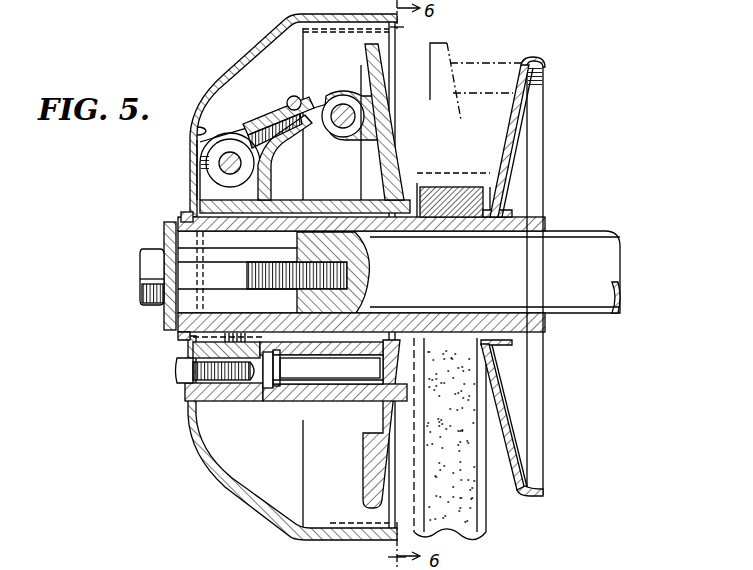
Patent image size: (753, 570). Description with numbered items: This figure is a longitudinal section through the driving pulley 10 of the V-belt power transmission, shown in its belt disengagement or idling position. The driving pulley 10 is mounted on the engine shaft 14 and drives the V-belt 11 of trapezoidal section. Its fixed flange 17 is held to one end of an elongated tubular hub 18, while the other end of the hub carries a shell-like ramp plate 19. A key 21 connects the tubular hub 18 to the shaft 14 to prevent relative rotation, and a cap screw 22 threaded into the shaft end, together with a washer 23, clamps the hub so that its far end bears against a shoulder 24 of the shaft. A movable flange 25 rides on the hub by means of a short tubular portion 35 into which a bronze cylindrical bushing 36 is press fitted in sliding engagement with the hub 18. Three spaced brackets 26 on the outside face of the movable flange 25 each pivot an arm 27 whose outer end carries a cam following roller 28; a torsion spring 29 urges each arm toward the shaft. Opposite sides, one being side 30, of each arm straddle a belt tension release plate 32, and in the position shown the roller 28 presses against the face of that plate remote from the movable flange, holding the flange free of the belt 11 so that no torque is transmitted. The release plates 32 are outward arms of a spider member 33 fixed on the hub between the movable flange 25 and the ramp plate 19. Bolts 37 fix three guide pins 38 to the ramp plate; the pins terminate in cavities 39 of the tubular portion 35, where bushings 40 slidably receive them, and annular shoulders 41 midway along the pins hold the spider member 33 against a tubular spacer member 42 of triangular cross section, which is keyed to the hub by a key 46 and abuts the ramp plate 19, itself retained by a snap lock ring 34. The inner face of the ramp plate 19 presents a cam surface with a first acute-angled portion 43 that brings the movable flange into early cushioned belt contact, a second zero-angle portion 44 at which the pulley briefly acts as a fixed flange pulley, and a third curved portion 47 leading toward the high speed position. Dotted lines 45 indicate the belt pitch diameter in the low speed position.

The driving pulley 10 is at (172, 190).
The V-belt 11 is at (477, 183).
The shaft 14 is at (606, 287).
The fixed flange 17 is at (514, 433).
The tubular hub 18 is at (543, 223).
The ramp plate 19 is at (204, 458).
The key 21 is at (481, 232).
The cap screw 22 is at (143, 293).
The washer 23 is at (167, 327).
The shoulder 24 is at (540, 259).
The movable flange 25 is at (388, 108).
The brackets 26 is at (346, 95).
The arm 27 is at (258, 122).
The cam following roller 28 is at (230, 140).
The torsion spring 29 is at (294, 96).
The side of roller arm 30 is at (305, 137).
The belt tension release plate 32 is at (268, 162).
The spider member 33 is at (262, 403).
The snap lock ring 34 is at (183, 213).
The tubular portion 35 is at (343, 197).
The cylindrical bushing 36 is at (318, 213).
The bolts 37 is at (180, 378).
The guide pins 38 is at (320, 395).
The cavities 39 is at (345, 403).
The bushings 40 is at (300, 403).
The annular shoulders 41 is at (278, 403).
The tubular spacer member 42 is at (215, 403).
The first portion of the cam surface 43 is at (190, 157).
The second portion of the cam surface 44 is at (193, 132).
The dotted lines 45 is at (476, 150).
The key 46 is at (183, 348).
The third, curved portion of the cam surface 47 is at (225, 76).